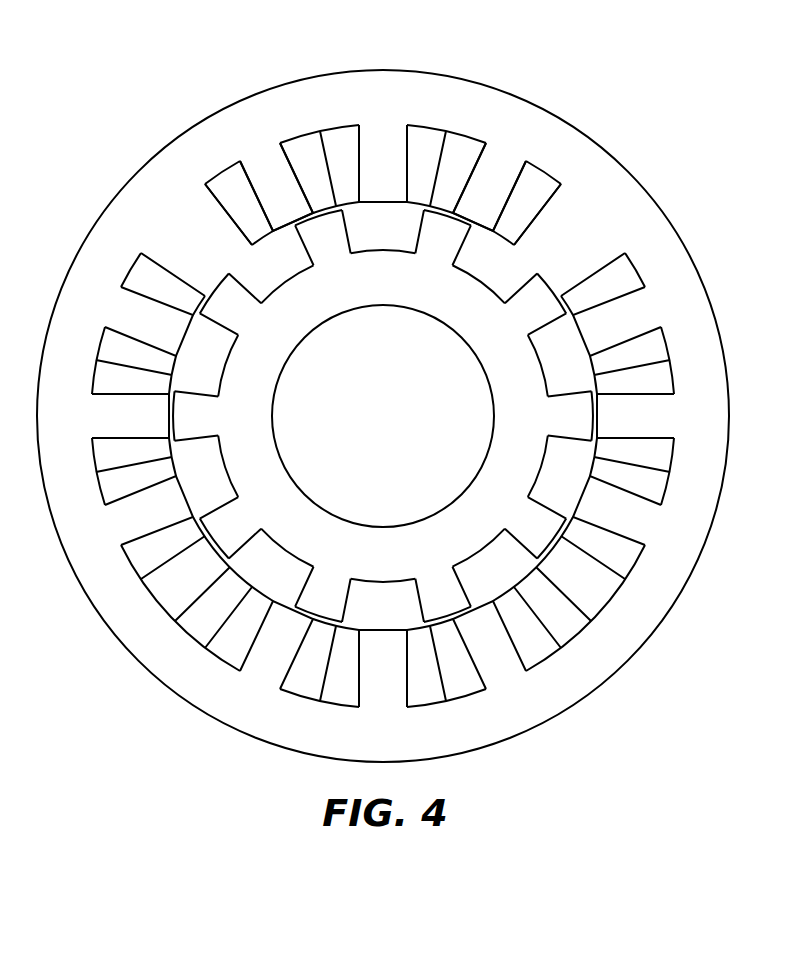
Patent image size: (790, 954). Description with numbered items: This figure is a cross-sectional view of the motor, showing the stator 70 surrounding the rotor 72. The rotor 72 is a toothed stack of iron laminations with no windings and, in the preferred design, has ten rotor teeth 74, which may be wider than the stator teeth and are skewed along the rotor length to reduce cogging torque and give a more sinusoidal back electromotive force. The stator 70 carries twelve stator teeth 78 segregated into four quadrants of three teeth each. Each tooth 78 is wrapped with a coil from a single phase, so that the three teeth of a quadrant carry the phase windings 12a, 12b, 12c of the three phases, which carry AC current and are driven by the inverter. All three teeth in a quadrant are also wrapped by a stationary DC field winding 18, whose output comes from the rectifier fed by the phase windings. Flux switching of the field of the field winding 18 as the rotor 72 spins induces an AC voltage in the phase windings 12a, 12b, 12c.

The phase winding (first phase) 12a is at (303, 157).
The phase winding (second phase) 12b is at (418, 137).
The phase winding (third phase) 12c is at (530, 187).
The DC field winding 18 is at (210, 213).
The stator 70 is at (88, 260).
The rotor 72 is at (371, 288).
The rotor teeth 74 is at (310, 245).
The stator teeth 78 is at (258, 195).